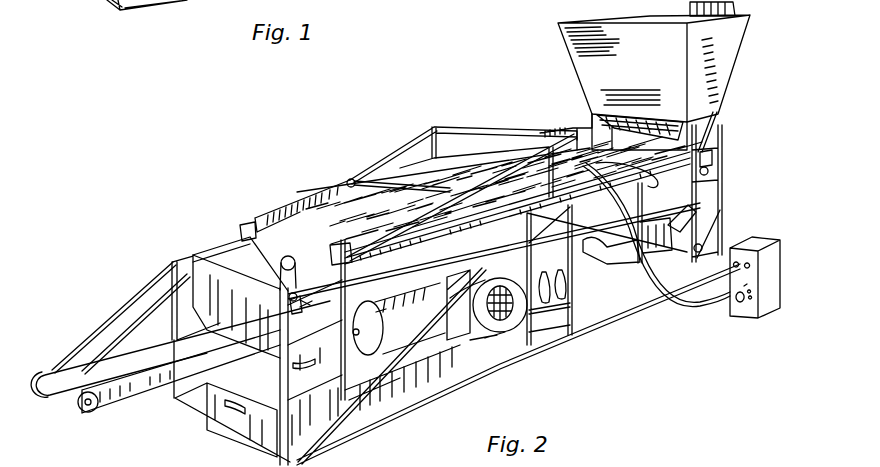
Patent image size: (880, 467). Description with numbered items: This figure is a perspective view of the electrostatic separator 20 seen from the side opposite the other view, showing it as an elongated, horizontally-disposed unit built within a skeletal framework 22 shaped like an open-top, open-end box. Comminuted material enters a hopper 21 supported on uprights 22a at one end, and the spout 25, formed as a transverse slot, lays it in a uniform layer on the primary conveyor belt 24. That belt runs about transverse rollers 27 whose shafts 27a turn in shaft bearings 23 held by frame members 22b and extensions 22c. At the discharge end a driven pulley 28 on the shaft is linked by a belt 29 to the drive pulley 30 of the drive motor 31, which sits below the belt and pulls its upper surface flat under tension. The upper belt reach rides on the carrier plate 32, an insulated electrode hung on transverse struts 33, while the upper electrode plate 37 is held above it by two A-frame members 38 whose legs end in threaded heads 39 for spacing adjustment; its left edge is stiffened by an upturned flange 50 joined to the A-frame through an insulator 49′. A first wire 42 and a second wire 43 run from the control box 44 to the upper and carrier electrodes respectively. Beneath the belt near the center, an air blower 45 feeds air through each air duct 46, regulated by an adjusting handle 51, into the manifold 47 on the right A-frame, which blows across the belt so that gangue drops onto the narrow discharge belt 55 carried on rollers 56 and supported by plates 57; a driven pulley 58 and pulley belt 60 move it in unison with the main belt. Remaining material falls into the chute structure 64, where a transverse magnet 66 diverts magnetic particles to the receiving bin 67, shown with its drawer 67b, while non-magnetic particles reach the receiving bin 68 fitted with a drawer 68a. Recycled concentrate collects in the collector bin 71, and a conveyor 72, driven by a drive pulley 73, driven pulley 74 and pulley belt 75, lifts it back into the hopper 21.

The electrostatic separator 20 is at (315, 131).
The hopper 21 is at (654, 62).
The skeletal framework 22 is at (582, 333).
The uprights 22a is at (715, 128).
The frame members 22b is at (288, 283).
The extensions 22c is at (117, 378).
The shaft bearings 23 is at (293, 297).
The primary conveyor belt 24 is at (250, 233).
The spout 25 is at (642, 137).
The transverse rollers 27 is at (280, 250).
The shafts 27a is at (712, 170).
The driven pulley 28 is at (297, 300).
The belt 29 is at (300, 307).
The drive pulley 30 is at (362, 342).
The drive motor 31 is at (383, 324).
The carrier plate 32 is at (317, 253).
The struts 33 is at (585, 168).
The upper electrode plate 37 is at (462, 197).
The A-frame members 38 is at (418, 138).
The threaded head 39 is at (313, 248).
The first wire 42 is at (720, 306).
The second wire 43 is at (688, 305).
The control box 44 is at (768, 308).
The air blower 45 is at (503, 330).
The air duct 46 is at (475, 283).
The manifold 47 is at (358, 238).
The insulator 49′ is at (350, 178).
The upturned flange 50 is at (562, 130).
The adjusting handle 51 is at (548, 297).
The discharge belt 55 is at (157, 350).
The rollers 56 is at (78, 408).
The plates 57 is at (97, 405).
The driven pulley 58 is at (43, 377).
The pulley belt 60 is at (123, 317).
The chute structure 64 is at (220, 280).
The magnet 66 is at (212, 243).
The receiving bin 67 is at (315, 416).
The drawer 67b is at (232, 401).
The receiving bin 68 is at (316, 320).
The drawer 68a is at (315, 360).
The collector bin 71 is at (640, 257).
The conveyor 72 is at (682, 213).
The drive pulley 73 is at (712, 152).
The driven pulley 74 is at (702, 247).
The pulley belt 75 is at (703, 222).